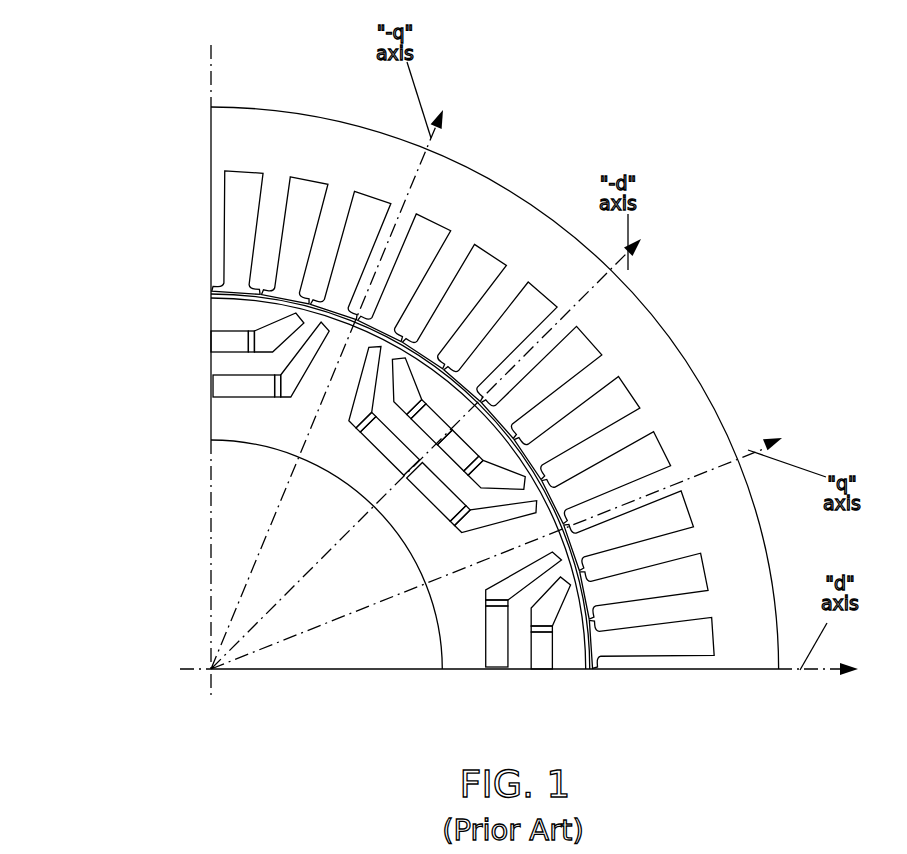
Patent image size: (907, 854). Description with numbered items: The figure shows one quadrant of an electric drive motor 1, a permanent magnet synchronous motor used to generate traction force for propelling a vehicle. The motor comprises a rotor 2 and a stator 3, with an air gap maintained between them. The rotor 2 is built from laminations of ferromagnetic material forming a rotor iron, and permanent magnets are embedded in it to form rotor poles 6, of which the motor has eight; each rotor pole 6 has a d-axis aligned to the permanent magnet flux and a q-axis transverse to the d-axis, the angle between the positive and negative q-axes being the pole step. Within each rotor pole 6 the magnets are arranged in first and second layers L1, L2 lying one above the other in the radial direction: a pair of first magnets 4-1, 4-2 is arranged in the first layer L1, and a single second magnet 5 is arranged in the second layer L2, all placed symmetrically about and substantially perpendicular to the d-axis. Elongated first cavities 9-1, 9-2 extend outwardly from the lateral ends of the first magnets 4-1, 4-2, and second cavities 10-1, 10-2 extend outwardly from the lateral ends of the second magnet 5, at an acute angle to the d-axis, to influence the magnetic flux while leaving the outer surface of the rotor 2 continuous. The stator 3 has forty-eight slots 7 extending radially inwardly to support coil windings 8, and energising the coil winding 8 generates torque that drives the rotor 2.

The electric drive motor 1 is at (580, 165).
The rotor 2 is at (452, 633).
The stator 3 is at (357, 150).
The first magnet 4-1 is at (392, 455).
The first magnet 4-2 is at (437, 493).
The second magnet 5 is at (476, 440).
The rotor pole 6 is at (303, 493).
The slot 7 is at (262, 222).
The coil winding 8 is at (237, 270).
The first cavity 9-1 is at (363, 400).
The first cavity 9-2 is at (478, 520).
The second cavity 10-1 is at (408, 383).
The second cavity 10-2 is at (503, 473).
The first layer L1 is at (353, 442).
The second layer L2 is at (440, 407).